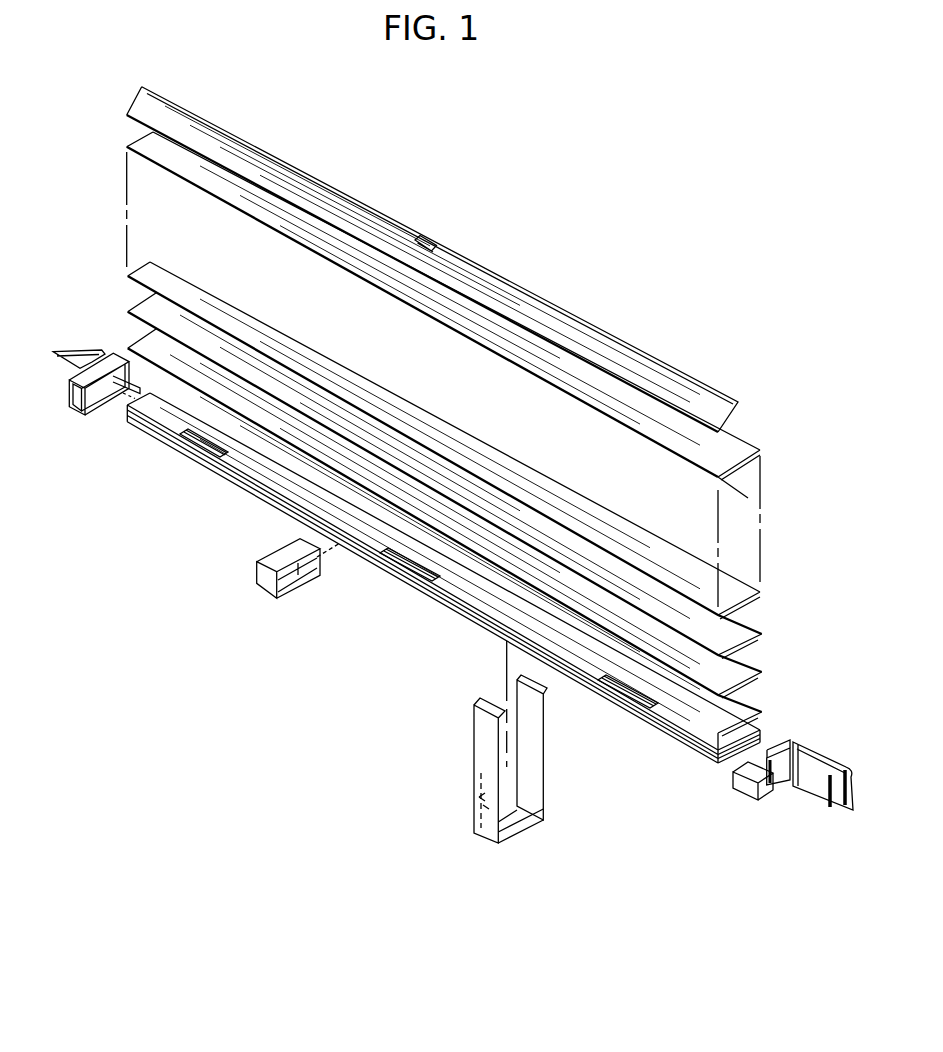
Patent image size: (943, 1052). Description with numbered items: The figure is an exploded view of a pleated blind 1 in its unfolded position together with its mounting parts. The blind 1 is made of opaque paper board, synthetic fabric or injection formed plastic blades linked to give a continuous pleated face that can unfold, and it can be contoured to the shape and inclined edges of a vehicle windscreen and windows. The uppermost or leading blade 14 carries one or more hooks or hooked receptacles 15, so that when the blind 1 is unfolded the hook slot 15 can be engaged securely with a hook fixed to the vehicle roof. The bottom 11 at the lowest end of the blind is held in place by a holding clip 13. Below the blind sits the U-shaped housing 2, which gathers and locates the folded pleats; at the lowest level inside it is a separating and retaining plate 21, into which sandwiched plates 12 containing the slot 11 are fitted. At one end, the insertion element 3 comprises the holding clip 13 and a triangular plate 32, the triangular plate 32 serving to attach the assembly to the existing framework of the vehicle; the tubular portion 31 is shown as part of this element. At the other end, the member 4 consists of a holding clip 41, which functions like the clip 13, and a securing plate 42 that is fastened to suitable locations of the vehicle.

The pleated blind 1 is at (752, 648).
The housing 2 is at (484, 761).
The insertion element 3 is at (75, 382).
The member 4 is at (781, 800).
The bottom 11 is at (440, 598).
The sandwiched plates 12 is at (377, 548).
The holding clip 13 is at (265, 585).
The leading blade 14 is at (308, 185).
The hooked receptacle 15 is at (428, 233).
The separating and retaining plate 21 is at (515, 808).
The tubular member 31 is at (69, 391).
The triangular plate 32 is at (77, 348).
The holding clip 41 is at (747, 789).
The securing plate 42 is at (812, 790).